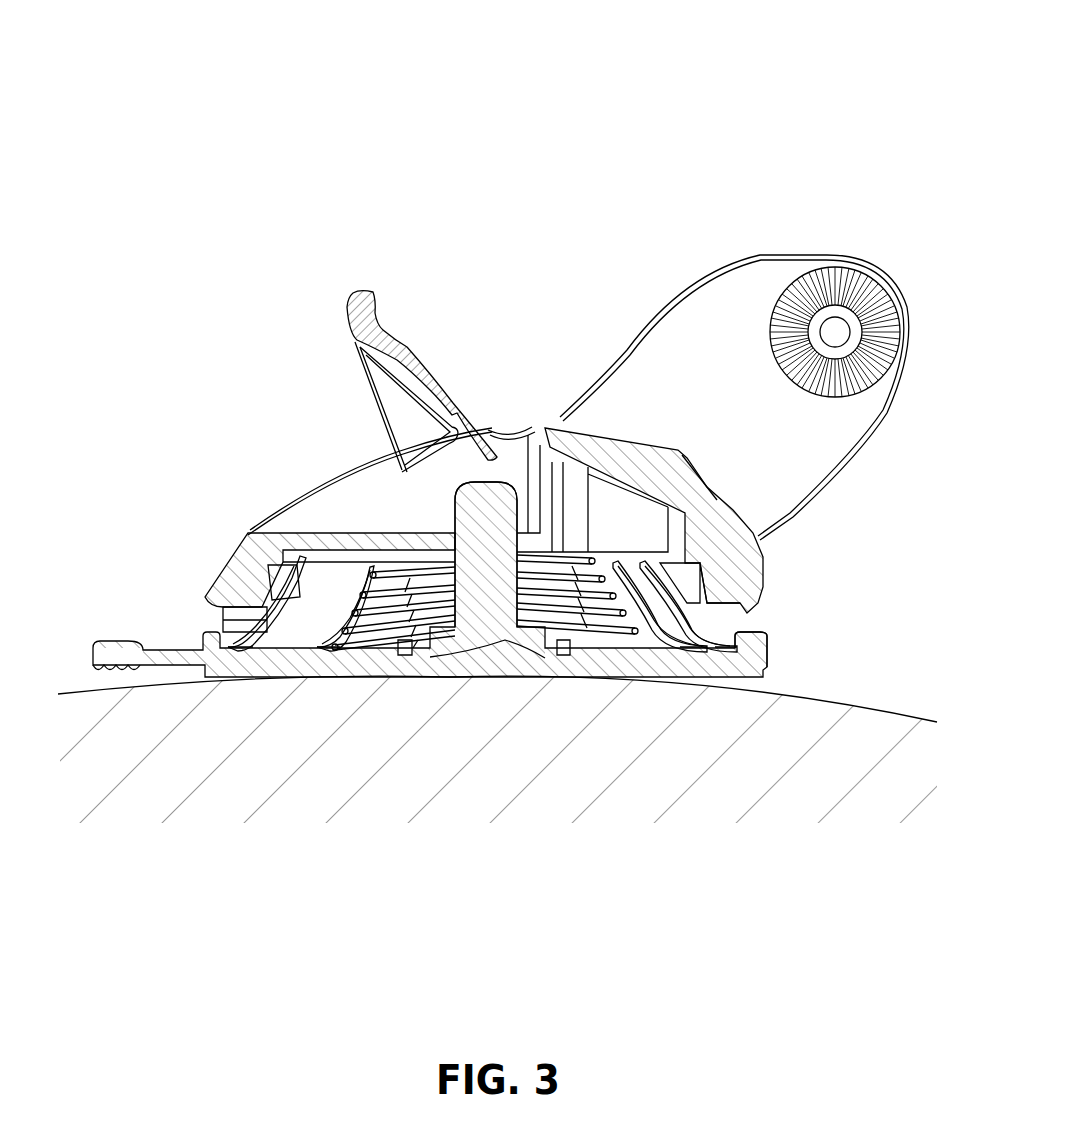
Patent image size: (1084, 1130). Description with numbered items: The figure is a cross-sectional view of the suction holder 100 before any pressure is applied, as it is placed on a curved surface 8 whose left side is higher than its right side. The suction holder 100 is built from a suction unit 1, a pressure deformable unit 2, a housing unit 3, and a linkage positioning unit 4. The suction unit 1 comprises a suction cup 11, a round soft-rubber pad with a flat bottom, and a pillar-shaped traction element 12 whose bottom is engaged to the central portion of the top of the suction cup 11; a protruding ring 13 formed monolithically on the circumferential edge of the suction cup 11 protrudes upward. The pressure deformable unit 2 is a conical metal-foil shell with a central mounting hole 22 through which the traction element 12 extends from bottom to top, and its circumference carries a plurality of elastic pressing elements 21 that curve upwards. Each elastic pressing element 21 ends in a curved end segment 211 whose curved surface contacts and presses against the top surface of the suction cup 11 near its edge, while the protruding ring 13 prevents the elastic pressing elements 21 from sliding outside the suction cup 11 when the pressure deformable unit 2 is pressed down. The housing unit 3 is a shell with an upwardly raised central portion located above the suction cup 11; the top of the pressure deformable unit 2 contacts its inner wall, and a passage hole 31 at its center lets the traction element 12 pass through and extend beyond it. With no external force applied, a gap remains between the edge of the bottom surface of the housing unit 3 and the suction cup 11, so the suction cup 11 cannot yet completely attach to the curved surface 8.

The suction holder 100 is at (766, 112).
The suction unit 1 is at (506, 584).
The suction cup 11 is at (737, 663).
The protruding ring 13 is at (760, 643).
The pressure deformable unit 2 is at (496, 540).
The elastic pressing element 21 is at (240, 617).
The curved end segment 211 is at (250, 647).
The housing unit 3 is at (578, 416).
The passage hole 31 is at (398, 468).
The linkage positioning unit 4 is at (477, 493).
The traction element 12 is at (527, 505).
The mounting hole 22 is at (525, 427).
The curved surface 8 is at (83, 693).